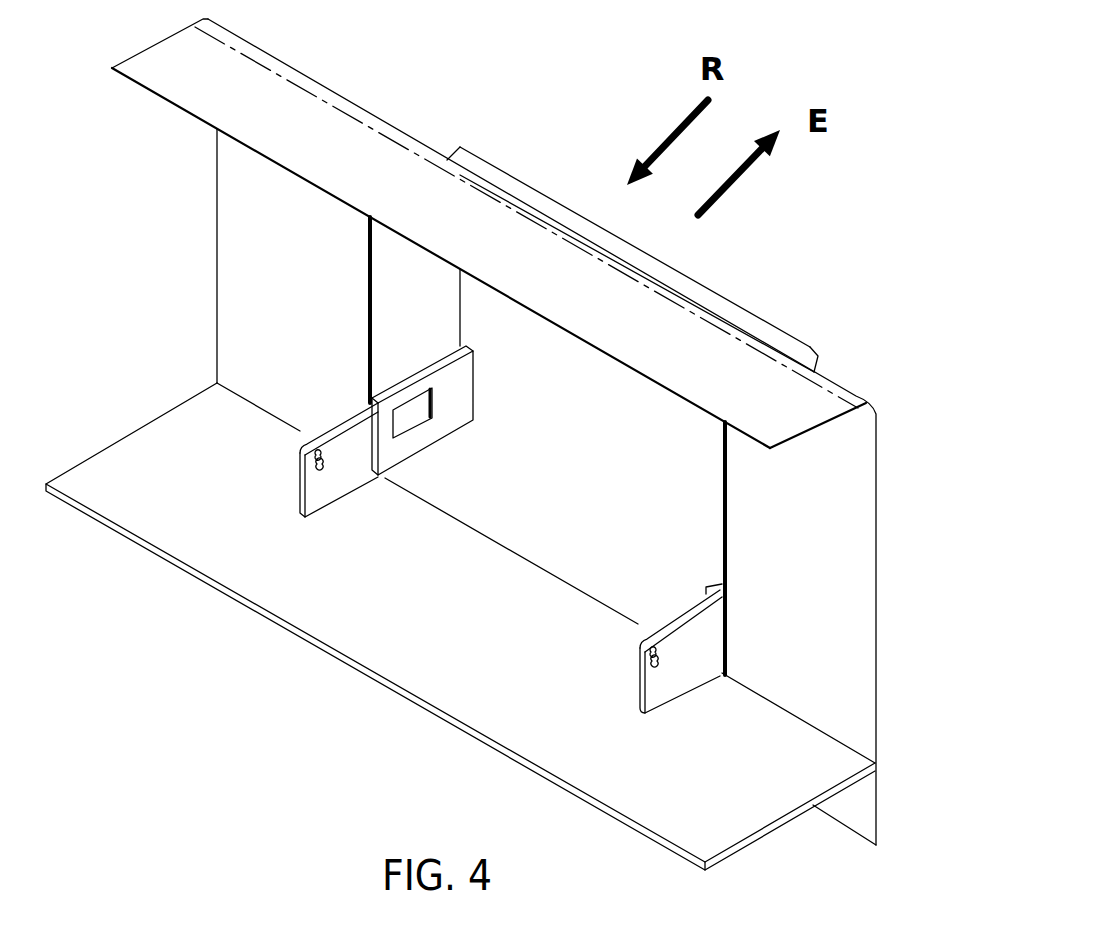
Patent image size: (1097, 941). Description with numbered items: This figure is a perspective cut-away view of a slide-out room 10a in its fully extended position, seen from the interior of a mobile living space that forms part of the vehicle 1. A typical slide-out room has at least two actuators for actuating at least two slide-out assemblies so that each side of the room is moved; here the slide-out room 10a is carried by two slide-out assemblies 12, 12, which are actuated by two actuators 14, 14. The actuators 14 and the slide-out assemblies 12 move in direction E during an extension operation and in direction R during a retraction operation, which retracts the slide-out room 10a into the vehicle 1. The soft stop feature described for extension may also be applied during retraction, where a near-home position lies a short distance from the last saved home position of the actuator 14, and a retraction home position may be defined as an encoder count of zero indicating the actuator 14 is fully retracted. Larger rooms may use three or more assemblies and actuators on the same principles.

The vehicle 1 is at (908, 310).
The slide-out room 10a is at (401, 271).
The slide-out assembly 12 is at (408, 443).
The actuator 14 is at (293, 488).